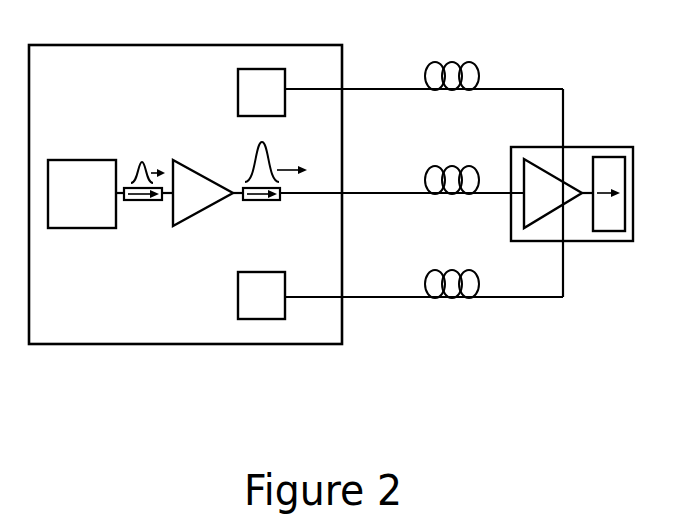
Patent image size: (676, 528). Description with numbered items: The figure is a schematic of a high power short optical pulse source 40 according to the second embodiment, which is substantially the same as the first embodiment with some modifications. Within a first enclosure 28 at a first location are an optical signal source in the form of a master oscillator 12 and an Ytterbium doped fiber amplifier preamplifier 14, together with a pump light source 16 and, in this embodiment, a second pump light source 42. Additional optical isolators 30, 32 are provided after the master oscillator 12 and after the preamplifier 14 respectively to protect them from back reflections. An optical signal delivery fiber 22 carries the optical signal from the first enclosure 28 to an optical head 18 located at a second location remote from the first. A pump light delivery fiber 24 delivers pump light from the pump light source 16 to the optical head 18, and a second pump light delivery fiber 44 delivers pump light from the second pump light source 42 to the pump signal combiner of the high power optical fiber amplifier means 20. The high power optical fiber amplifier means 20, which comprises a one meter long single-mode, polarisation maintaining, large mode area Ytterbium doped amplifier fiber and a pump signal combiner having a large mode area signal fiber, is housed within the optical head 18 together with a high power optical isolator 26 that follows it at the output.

The master oscillator 12 is at (85, 170).
The Ytterbium doped fiber amplifier preamplifier 14 is at (193, 197).
The pump light source 16 is at (250, 91).
The optical head 18 is at (572, 179).
The high power optical fiber amplifier means 20 is at (553, 197).
The optical signal delivery fiber 22 is at (384, 195).
The pump light delivery fiber 24 is at (514, 89).
The high power optical isolator 26 is at (608, 157).
The first enclosure 28 is at (229, 344).
The optical isolator 30 is at (138, 200).
The optical isolator 32 is at (260, 200).
The high power short optical pulse source 40 is at (114, 364).
The second pump light source 42 is at (250, 296).
The second pump light delivery fiber 44 is at (383, 298).